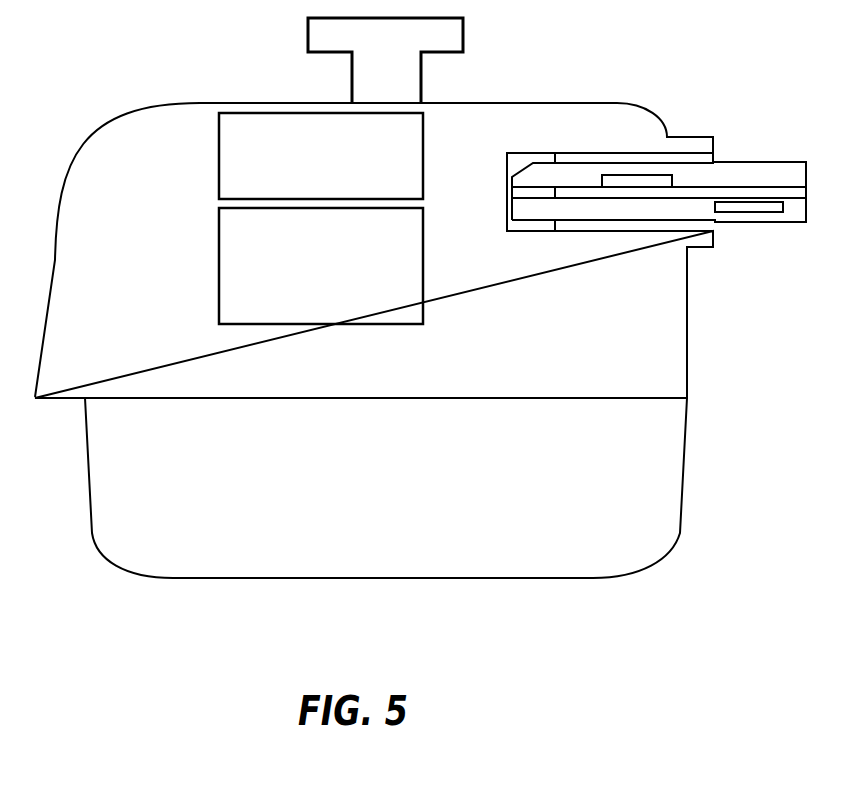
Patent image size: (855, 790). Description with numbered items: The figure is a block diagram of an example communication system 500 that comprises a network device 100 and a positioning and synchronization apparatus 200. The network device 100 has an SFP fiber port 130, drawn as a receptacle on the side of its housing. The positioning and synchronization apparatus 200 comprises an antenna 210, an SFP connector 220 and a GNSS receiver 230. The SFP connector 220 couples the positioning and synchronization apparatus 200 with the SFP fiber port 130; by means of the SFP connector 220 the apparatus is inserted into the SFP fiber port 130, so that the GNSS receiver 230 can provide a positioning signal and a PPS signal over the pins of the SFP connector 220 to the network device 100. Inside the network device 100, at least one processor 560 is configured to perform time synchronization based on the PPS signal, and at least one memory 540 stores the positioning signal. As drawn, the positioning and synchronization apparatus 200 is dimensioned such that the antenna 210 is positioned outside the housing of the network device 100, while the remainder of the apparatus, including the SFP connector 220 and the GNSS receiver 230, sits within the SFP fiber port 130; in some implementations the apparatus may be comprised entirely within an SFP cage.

The communication system 500 is at (203, 57).
The network device 100 is at (563, 103).
The SFP fiber port 130 is at (532, 152).
The positioning and synchronization apparatus 200 is at (757, 160).
The antenna 210 is at (770, 212).
The SFP connector 220 is at (516, 184).
The GNSS receiver 230 is at (647, 175).
The memory 540 is at (377, 325).
The processor 560 is at (218, 173).